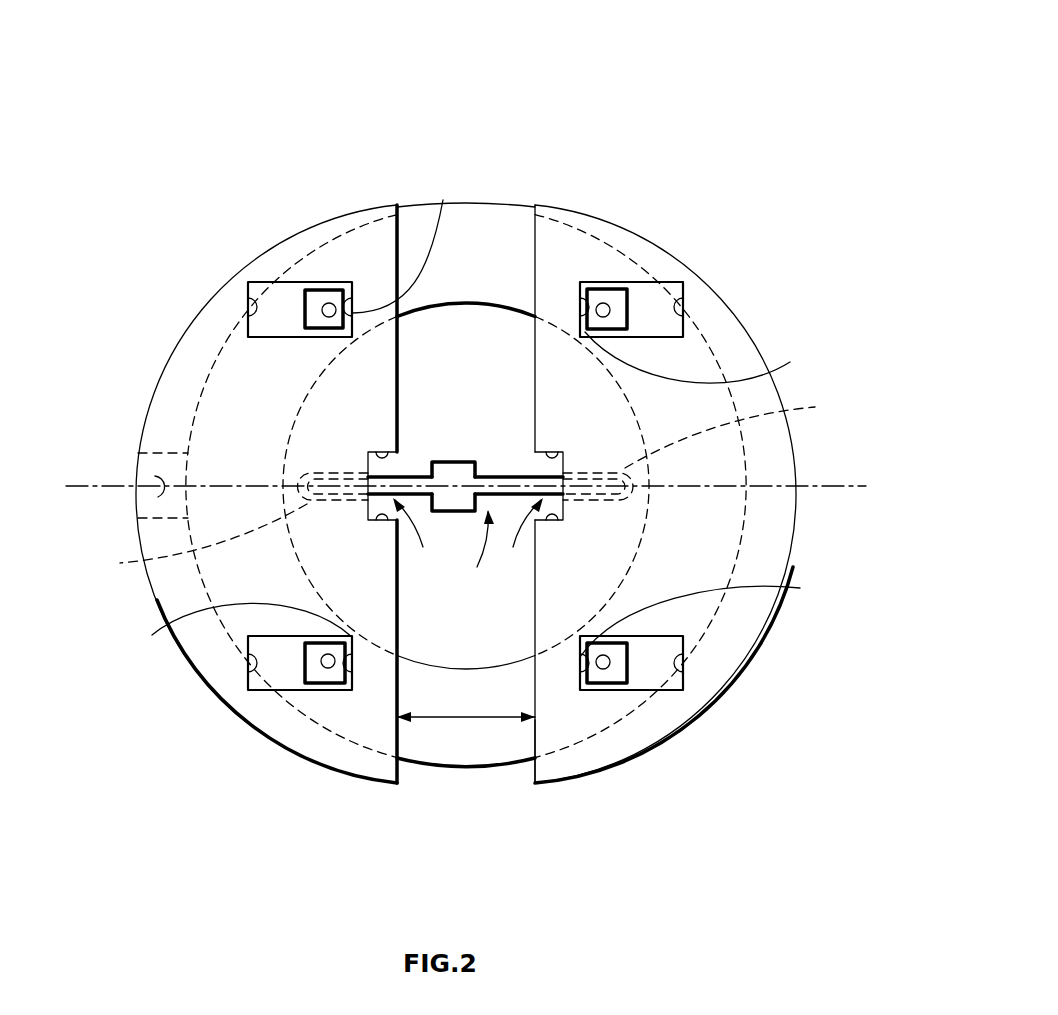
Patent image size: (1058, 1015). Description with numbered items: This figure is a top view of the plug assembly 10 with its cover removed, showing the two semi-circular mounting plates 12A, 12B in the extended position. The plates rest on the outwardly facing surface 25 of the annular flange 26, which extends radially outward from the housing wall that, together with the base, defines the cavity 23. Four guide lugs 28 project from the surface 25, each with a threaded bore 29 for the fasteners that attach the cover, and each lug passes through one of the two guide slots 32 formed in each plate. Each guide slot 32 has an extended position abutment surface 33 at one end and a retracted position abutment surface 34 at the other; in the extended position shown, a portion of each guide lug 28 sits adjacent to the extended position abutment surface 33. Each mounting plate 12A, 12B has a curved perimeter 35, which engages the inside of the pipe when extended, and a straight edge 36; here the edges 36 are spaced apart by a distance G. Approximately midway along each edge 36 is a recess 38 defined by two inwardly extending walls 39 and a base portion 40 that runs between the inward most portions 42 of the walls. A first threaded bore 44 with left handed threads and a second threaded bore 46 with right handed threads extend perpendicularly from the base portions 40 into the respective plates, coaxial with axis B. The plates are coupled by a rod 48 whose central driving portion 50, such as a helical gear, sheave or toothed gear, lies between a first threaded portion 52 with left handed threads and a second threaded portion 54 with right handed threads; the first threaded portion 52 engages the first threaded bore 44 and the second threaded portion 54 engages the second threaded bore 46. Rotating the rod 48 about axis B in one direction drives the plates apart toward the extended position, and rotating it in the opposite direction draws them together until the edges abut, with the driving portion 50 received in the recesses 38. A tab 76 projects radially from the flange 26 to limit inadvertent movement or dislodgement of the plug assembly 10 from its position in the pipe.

The plug assembly 10 is at (750, 44).
The mounting plate 12A is at (267, 248).
The mounting plate 12B is at (648, 237).
The cavity 23 is at (466, 700).
The outwardly facing surface 25 is at (477, 737).
The annular flange 26 is at (463, 203).
The guide lug 28 is at (327, 290).
The threaded bore 29 is at (330, 308).
The guide slot 32 is at (257, 337).
The extended position abutment surface 33 is at (480, 413).
The retracted position abutment surface 34 is at (247, 313).
The curved perimeter 35 is at (797, 463).
The edge 36 is at (398, 737).
The recess 38 is at (468, 538).
The inwardly extending wall 39 is at (388, 447).
The base portion 40 is at (370, 477).
The inward most portion 42 is at (378, 452).
The first threaded bore 44 is at (195, 537).
The second threaded bore 46 is at (734, 429).
The rod 48 is at (471, 552).
The central driving portion 50 is at (448, 462).
The first threaded portion 52 is at (363, 503).
The second threaded portion 54 is at (598, 496).
The tab 76 is at (158, 487).
The axis B is at (473, 506).
The distance G is at (457, 717).